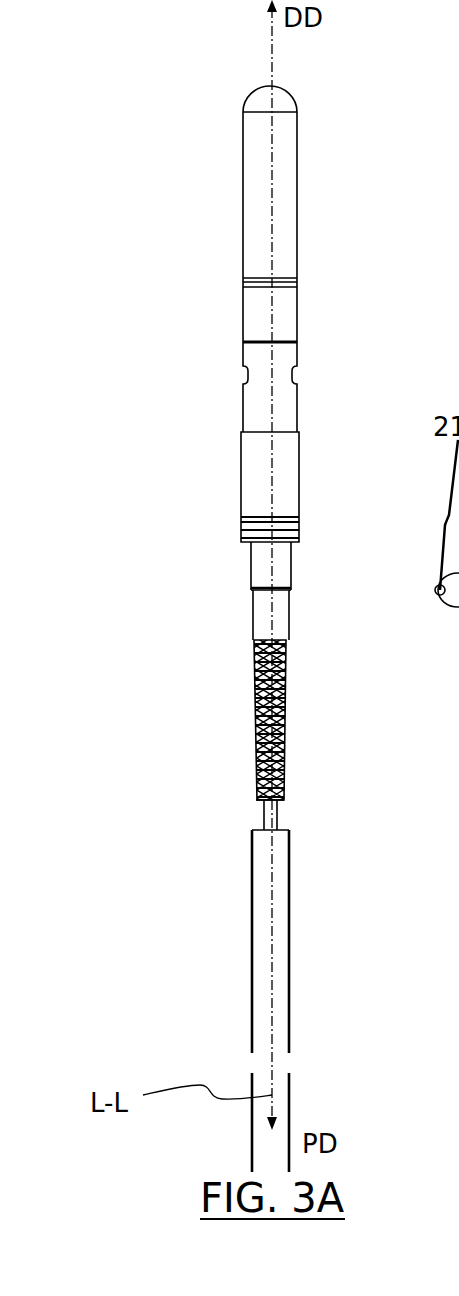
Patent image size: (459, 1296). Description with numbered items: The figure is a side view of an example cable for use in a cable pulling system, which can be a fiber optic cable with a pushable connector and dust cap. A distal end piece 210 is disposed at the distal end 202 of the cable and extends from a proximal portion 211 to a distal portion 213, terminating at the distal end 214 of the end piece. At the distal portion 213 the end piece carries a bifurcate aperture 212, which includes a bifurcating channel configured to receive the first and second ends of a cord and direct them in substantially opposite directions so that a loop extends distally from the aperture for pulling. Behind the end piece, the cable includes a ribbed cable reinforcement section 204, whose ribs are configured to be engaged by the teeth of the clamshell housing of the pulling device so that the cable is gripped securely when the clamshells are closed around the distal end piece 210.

The distal end 202 is at (196, 777).
The ribbed cable reinforcement section 204 is at (273, 718).
The distal end piece 210 is at (243, 272).
The proximal portion 211 is at (196, 493).
The bifurcate aperture 212 is at (210, 832).
The distal portion 213 is at (316, 176).
The distal end 214 is at (236, 92).